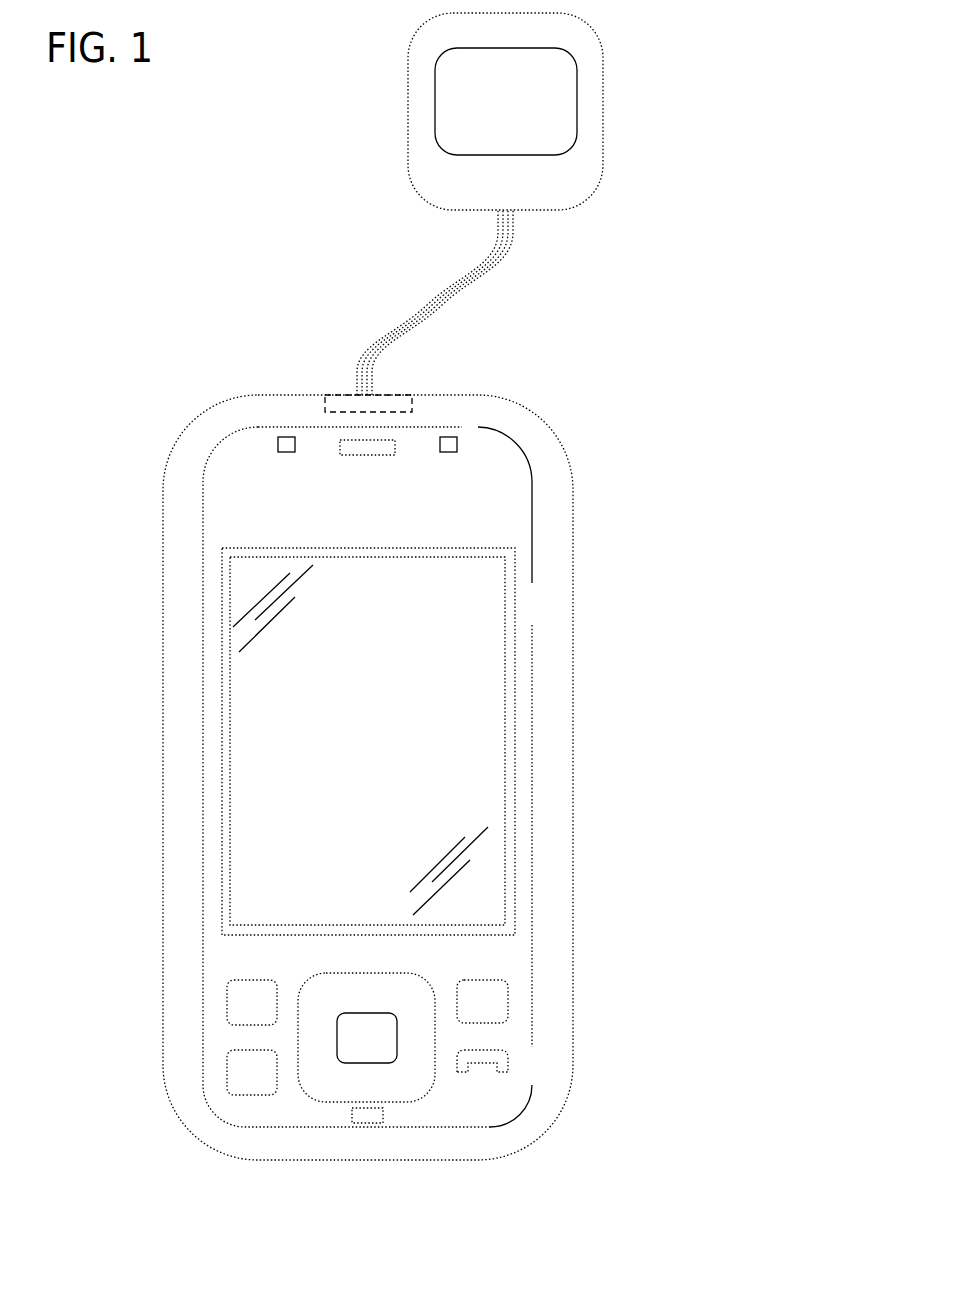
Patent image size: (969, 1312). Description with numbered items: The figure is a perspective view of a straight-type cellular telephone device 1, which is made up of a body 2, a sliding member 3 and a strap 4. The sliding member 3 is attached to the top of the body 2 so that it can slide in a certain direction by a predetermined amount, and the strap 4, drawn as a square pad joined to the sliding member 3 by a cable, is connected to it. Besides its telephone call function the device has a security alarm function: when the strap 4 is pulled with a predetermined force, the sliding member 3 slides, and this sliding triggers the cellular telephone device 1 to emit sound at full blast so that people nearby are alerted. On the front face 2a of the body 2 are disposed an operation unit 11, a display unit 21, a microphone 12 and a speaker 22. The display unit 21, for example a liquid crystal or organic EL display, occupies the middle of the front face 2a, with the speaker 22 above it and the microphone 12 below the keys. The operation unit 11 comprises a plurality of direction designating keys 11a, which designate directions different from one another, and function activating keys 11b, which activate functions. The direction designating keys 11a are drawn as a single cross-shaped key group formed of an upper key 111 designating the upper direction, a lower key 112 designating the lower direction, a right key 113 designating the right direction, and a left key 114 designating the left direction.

The cellular telephone device 1 is at (154, 282).
The body 2 is at (596, 516).
The front face 2a is at (235, 452).
The sliding member 3 is at (338, 393).
The strap 4 is at (620, 146).
The operation unit 11 is at (215, 1000).
The direction designating keys 11a is at (312, 1110).
The function activating keys 11b is at (227, 1012).
The microphone 12 is at (377, 1125).
The display unit 21 is at (475, 783).
The speaker 22 is at (395, 452).
The upper key 111 is at (377, 983).
The lower key 112 is at (355, 1080).
The right key 113 is at (428, 1040).
The left key 114 is at (318, 1040).